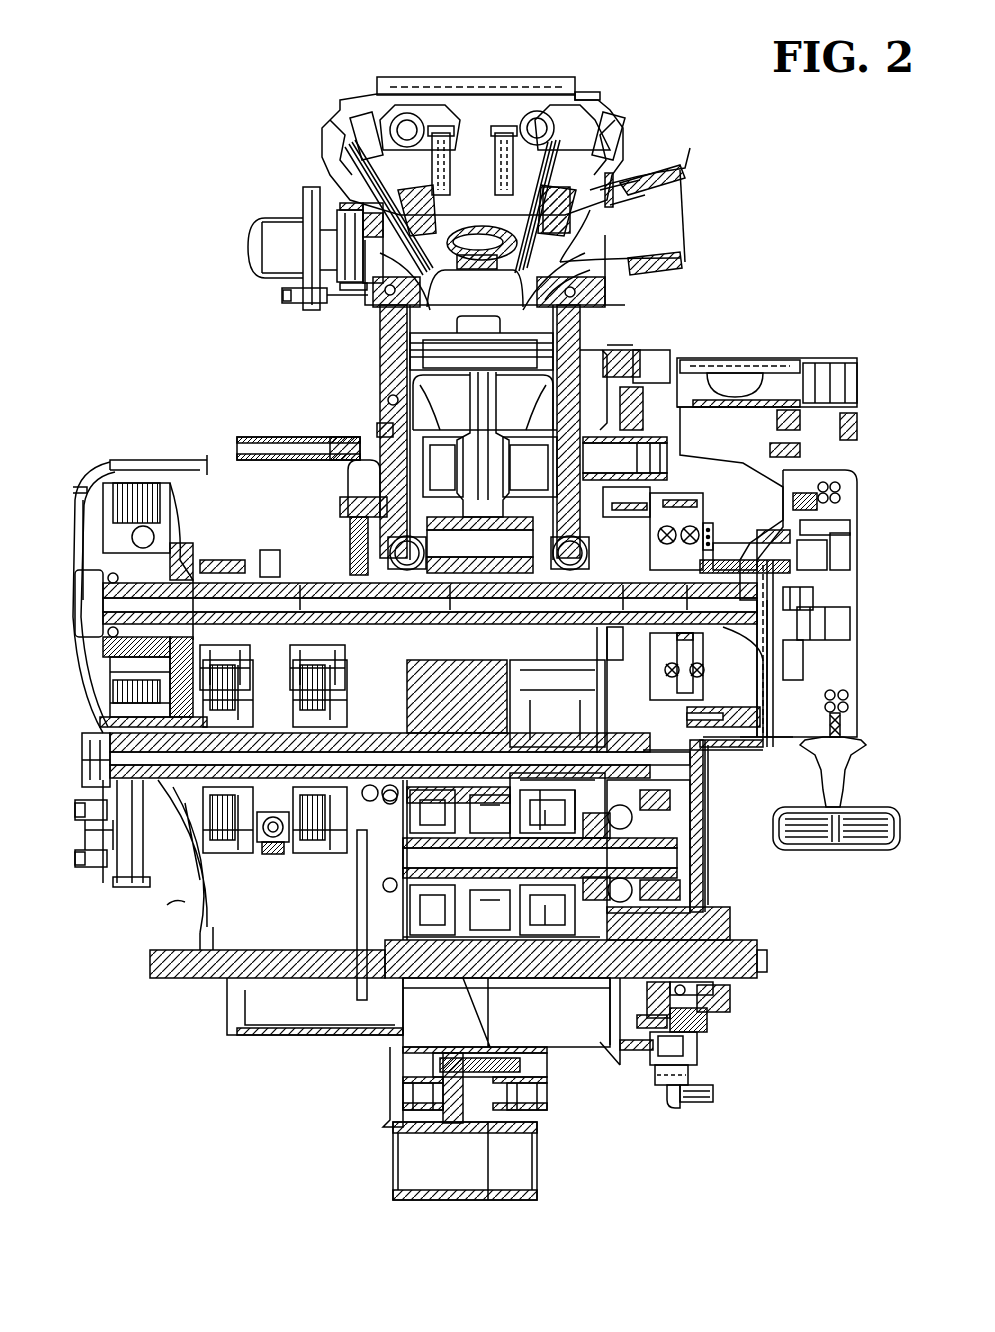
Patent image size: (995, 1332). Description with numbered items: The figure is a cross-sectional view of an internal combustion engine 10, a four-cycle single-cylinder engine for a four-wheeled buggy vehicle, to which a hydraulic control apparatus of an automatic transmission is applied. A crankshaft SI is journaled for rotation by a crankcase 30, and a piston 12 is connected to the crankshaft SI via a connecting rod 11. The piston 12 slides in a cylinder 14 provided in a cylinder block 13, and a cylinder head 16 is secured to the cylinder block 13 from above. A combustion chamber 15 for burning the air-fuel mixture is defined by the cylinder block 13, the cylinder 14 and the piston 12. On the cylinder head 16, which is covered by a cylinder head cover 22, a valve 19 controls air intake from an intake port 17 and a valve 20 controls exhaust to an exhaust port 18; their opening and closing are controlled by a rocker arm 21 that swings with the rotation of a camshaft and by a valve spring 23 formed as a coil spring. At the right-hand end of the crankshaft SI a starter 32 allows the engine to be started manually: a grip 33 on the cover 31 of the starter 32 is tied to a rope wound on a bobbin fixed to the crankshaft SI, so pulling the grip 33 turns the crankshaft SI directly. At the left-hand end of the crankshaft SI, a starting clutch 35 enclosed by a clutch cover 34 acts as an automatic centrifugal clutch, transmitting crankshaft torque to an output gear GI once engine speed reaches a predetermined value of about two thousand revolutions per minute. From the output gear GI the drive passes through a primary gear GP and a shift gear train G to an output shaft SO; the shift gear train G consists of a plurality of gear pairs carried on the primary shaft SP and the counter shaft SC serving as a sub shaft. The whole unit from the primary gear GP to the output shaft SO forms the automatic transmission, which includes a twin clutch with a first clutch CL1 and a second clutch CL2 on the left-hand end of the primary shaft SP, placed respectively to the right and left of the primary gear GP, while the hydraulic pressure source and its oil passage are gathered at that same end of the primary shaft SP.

The internal combustion engine 10 is at (166, 101).
The connecting rod 11 is at (477, 412).
The piston 12 is at (527, 320).
The cylinder block 13 is at (672, 345).
The cylinder 14 is at (383, 397).
The combustion chamber 15 is at (375, 312).
The cylinder head 16 is at (322, 171).
The intake port 17 is at (625, 247).
The exhaust port 18 is at (383, 252).
The valve 19 is at (570, 258).
The valve 20 is at (335, 215).
The rocker arm 21 is at (527, 100).
The cylinder head cover 22 is at (420, 78).
The valve spring 23 is at (600, 190).
The crankcase 30 is at (703, 842).
The cover 31 is at (835, 474).
The starter 32 is at (833, 597).
The grip 33 is at (872, 805).
The clutch cover 34 is at (90, 490).
The starting clutch 35 is at (140, 485).
The crankshaft SI is at (208, 560).
The output gear GI is at (273, 550).
The first clutch CL1 is at (325, 855).
The second clutch CL2 is at (230, 855).
The primary gear GP is at (275, 866).
The primary shaft SP is at (597, 757).
The counter shaft SC is at (700, 873).
The output shaft SO is at (745, 980).
The shift gear train G is at (463, 980).